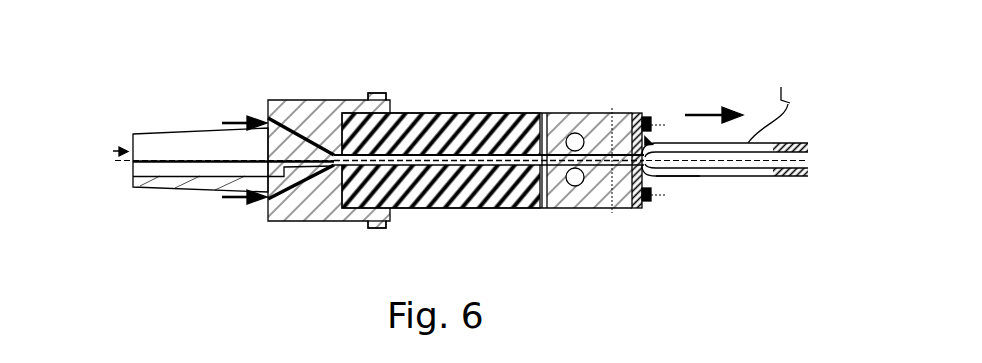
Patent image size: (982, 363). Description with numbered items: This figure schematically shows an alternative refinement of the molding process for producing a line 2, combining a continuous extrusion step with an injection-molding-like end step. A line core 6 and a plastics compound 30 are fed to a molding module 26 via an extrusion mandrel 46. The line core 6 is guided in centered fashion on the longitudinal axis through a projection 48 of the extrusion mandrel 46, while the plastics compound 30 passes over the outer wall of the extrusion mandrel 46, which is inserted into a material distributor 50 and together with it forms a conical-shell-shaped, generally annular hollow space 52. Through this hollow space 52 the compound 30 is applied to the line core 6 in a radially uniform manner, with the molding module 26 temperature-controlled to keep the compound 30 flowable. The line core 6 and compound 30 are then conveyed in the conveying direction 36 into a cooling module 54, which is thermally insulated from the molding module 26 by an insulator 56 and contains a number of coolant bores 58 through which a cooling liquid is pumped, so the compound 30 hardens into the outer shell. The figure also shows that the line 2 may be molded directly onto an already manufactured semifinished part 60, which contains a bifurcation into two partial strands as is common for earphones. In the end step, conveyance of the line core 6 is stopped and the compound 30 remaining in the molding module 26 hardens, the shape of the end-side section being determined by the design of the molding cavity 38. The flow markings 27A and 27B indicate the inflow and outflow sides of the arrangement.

The line 2 is at (748, 187).
The line core 6 is at (158, 160).
The molding module 26 is at (470, 113).
The inlet flow 27A is at (114, 151).
The outlet flow 27B is at (650, 140).
The plastics compound 30 is at (238, 118).
The conveying direction 36 is at (712, 110).
The molding cavity 38 is at (400, 153).
The extrusion mandrel 46 is at (178, 182).
The projection 48 is at (374, 92).
The material distributor 50 is at (327, 100).
The hollow space 52 is at (277, 118).
The cooling module 54 is at (612, 110).
The insulator 56 is at (545, 112).
The coolant bores 58 is at (574, 133).
The semifinished part 60 is at (687, 178).